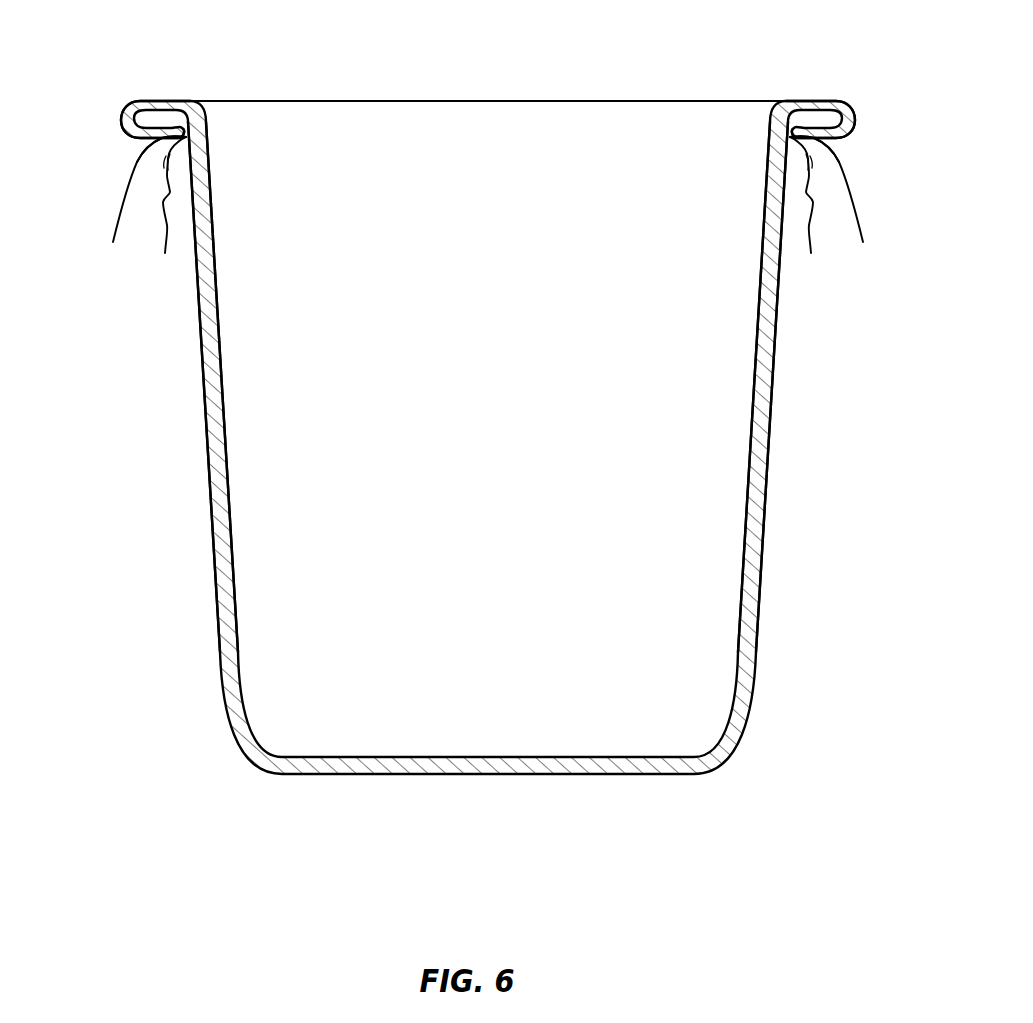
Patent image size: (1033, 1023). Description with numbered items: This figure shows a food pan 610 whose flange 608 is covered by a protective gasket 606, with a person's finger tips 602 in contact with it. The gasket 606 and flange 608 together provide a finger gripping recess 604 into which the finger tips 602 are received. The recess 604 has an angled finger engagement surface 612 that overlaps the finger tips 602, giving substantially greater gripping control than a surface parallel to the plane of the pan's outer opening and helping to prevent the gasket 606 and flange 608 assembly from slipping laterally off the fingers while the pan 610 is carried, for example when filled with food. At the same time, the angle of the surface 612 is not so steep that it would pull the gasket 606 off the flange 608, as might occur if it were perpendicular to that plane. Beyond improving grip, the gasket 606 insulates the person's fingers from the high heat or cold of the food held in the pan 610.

The finger tips 602 is at (136, 198).
The finger gripping recess 604 is at (203, 122).
The gasket 606 is at (140, 101).
The flange 608 is at (160, 117).
The pan 610 is at (143, 546).
The angled finger engagement surface 612 is at (137, 163).